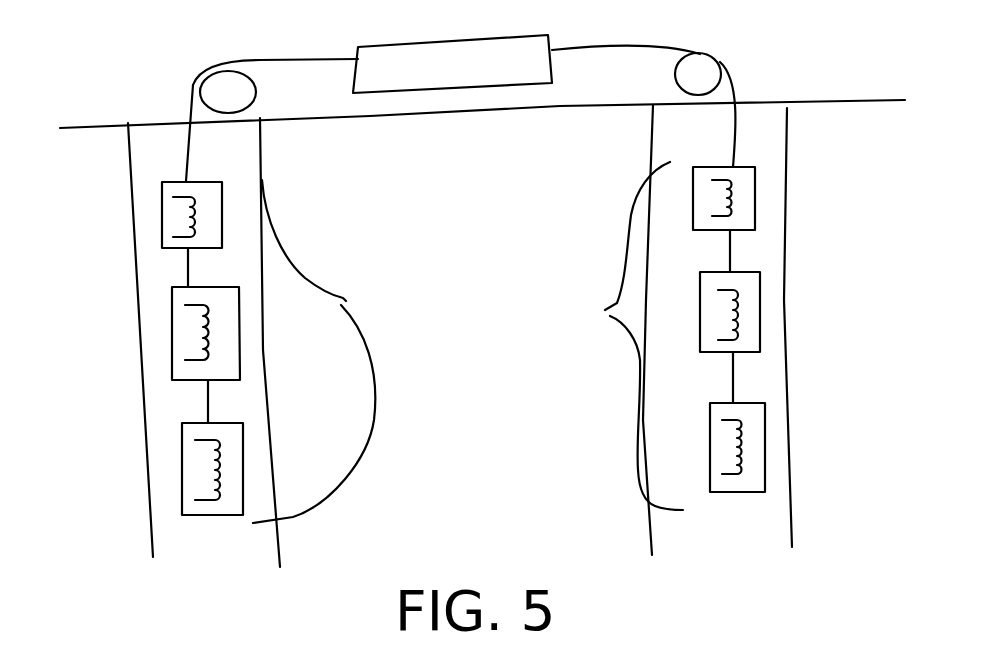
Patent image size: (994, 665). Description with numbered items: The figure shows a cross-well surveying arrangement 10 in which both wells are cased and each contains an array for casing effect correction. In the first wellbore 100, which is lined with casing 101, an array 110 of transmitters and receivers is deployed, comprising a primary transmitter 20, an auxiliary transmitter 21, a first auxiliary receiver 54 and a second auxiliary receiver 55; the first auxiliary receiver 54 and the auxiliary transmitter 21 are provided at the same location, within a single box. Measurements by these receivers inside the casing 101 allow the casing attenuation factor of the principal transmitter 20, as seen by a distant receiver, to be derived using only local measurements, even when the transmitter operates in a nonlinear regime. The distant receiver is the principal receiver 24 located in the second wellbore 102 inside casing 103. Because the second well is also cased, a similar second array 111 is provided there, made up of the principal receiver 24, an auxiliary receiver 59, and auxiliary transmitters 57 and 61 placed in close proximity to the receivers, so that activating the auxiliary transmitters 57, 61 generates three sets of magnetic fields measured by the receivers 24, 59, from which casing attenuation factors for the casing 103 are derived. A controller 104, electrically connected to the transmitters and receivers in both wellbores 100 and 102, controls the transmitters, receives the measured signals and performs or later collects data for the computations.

The wireless power transfer system 10 is at (420, 225).
The primary transmitter 20 is at (155, 212).
The auxiliary transmitter 21 is at (134, 342).
The first auxiliary receiver 54 is at (170, 308).
The second auxiliary receiver 55 is at (182, 468).
The principal receiver 24 is at (767, 443).
The auxiliary transmitter 57 is at (798, 300).
The auxiliary receiver 59 is at (760, 291).
The auxiliary transmitter 61 is at (757, 190).
The wellbore 100 is at (215, 328).
The casing 101 is at (267, 357).
The second wellbore 102 is at (734, 327).
The casing 103 is at (790, 330).
The controller 104 is at (452, 64).
The array of transmitters and receivers 110 is at (332, 351).
The second array 111 is at (612, 336).